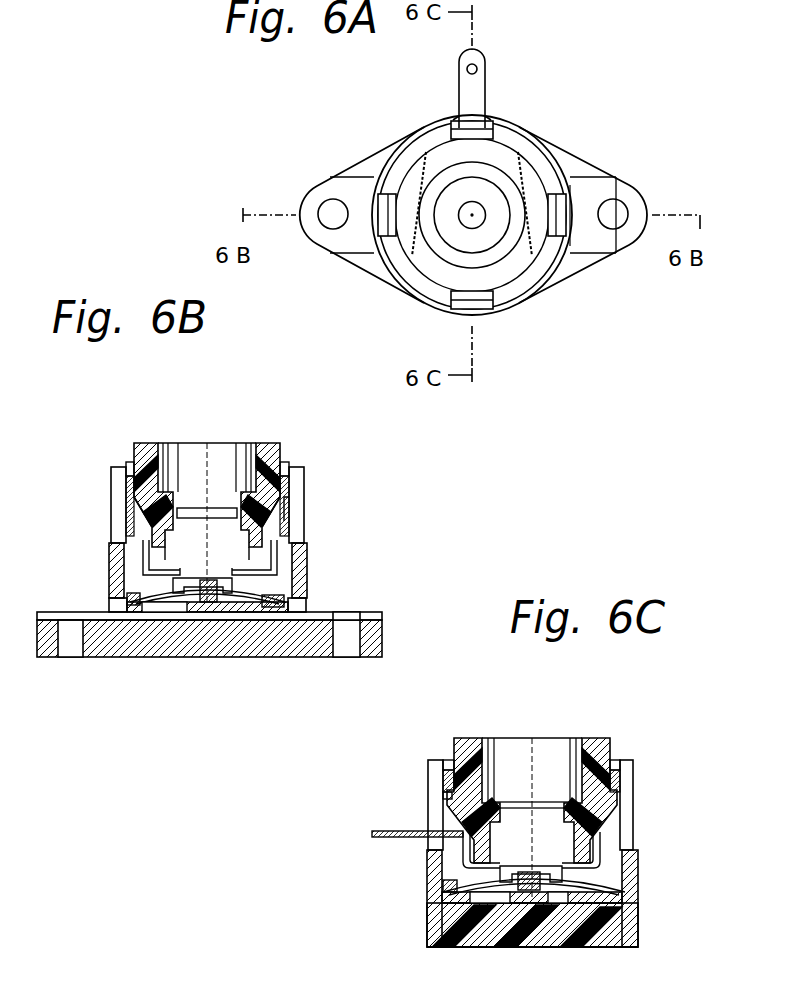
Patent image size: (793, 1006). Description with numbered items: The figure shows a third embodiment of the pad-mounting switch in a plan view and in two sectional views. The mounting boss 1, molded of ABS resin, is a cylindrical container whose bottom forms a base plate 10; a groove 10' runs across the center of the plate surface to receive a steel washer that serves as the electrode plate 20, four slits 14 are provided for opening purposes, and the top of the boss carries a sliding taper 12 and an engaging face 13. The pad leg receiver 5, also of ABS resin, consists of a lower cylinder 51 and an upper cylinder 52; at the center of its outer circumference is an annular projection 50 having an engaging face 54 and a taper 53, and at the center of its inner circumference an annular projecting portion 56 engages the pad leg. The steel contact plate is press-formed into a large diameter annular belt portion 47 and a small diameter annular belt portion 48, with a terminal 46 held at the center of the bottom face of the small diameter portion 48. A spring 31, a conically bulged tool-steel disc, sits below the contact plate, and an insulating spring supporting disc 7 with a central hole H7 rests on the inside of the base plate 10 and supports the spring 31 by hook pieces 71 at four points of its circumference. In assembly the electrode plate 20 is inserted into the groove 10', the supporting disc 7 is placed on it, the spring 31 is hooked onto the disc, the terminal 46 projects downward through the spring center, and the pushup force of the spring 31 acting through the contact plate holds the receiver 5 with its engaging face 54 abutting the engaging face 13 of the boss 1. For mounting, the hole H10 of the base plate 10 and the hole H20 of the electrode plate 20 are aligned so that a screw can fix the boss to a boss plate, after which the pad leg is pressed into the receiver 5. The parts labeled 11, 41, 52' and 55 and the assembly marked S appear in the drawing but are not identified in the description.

In FIG. 6B, the mounting boss 1 is at (330, 567).
In FIG. 6B, the pad leg receiver 5 is at (290, 436).
In FIG. 6C, the pad leg receiver 5 is at (600, 730).
In FIG. 6B, the insulating spring supporting disc 7 is at (152, 602).
In FIG. 6C, the insulating spring supporting disc 7 is at (465, 930).
In FIG. 6A, the base plate 10 is at (473, 216).
In FIG. 6B, the base plate 10 is at (209, 658).
In FIG. 6C, the base plate 10 is at (557, 930).
In FIG. 6A, the groove 10' is at (605, 189).
In FIG. 6C, the groove 10' is at (532, 965).
In FIG. 6B, the insulating base layer 11 is at (112, 581).
In FIG. 6C, the insulating base layer 11 is at (440, 905).
In FIG. 6A, the sliding taper 12 is at (547, 263).
In FIG. 6B, the sliding taper 12 is at (295, 467).
In FIG. 6C, the sliding taper 12 is at (450, 760).
In FIG. 6B, the engaging face 13 is at (297, 500).
In FIG. 6C, the engaging face 13 is at (445, 790).
In FIG. 6A, the slits 14 is at (467, 317).
In FIG. 6B, the slits 14 is at (120, 537).
In FIG. 6C, the slits 14 is at (640, 857).
In FIG. 6A, the steel electrode plate 20 is at (638, 196).
In FIG. 6B, the steel electrode plate 20 is at (318, 611).
In FIG. 6C, the steel electrode plate 20 is at (610, 937).
In FIG. 6B, the spring 31 is at (278, 605).
In FIG. 6C, the spring 31 is at (460, 870).
In FIG. 6A, the terminal 41 is at (479, 85).
In FIG. 6C, the terminal 41 is at (392, 833).
In FIG. 6A, the terminal 46 is at (466, 205).
In FIG. 6B, the terminal 46 is at (232, 605).
In FIG. 6C, the terminal 46 is at (566, 935).
In FIG. 6B, the large diameter annular belt portion 47 is at (310, 553).
In FIG. 6C, the large diameter annular belt portion 47 is at (635, 830).
In FIG. 6B, the small diameter annular belt portion 48 is at (290, 607).
In FIG. 6C, the small diameter annular belt portion 48 is at (605, 889).
In FIG. 6B, the annular projection 50 is at (128, 490).
In FIG. 6C, the annular projection 50 is at (445, 812).
In FIG. 6B, the lower cylinder 51 is at (201, 512).
In FIG. 6C, the lower cylinder 51 is at (532, 805).
In FIG. 6B, the upper cylinder 52 is at (200, 443).
In FIG. 6A, the insulating ring 52' is at (482, 240).
In FIG. 6B, the insulating ring 52' is at (194, 461).
In FIG. 6C, the insulating ring 52' is at (531, 764).
In FIG. 6B, the taper 53 is at (125, 516).
In FIG. 6A, the engaging face 54 is at (492, 312).
In FIG. 6B, the engaging face 54 is at (125, 470).
In FIG. 6C, the engaging face 54 is at (620, 762).
In FIG. 6B, the channel wall 55 is at (126, 556).
In FIG. 6C, the channel wall 55 is at (636, 805).
In FIG. 6A, the annular projecting portion 56 is at (438, 248).
In FIG. 6B, the annular projecting portion 56 is at (174, 537).
In FIG. 6C, the annular projecting portion 56 is at (525, 745).
In FIG. 6B, the spring support hook pieces 71 is at (116, 602).
In FIG. 6C, the spring support hook pieces 71 is at (460, 887).
In FIG. 6B, the switch S is at (269, 395).
In FIG. 6B, the hole H7 is at (198, 612).
In FIG. 6C, the hole H7 is at (508, 935).
In FIG. 6B, the hole H10 is at (374, 638).
In FIG. 6A, the hole H20 is at (337, 226).
In FIG. 6B, the hole H20 is at (354, 612).